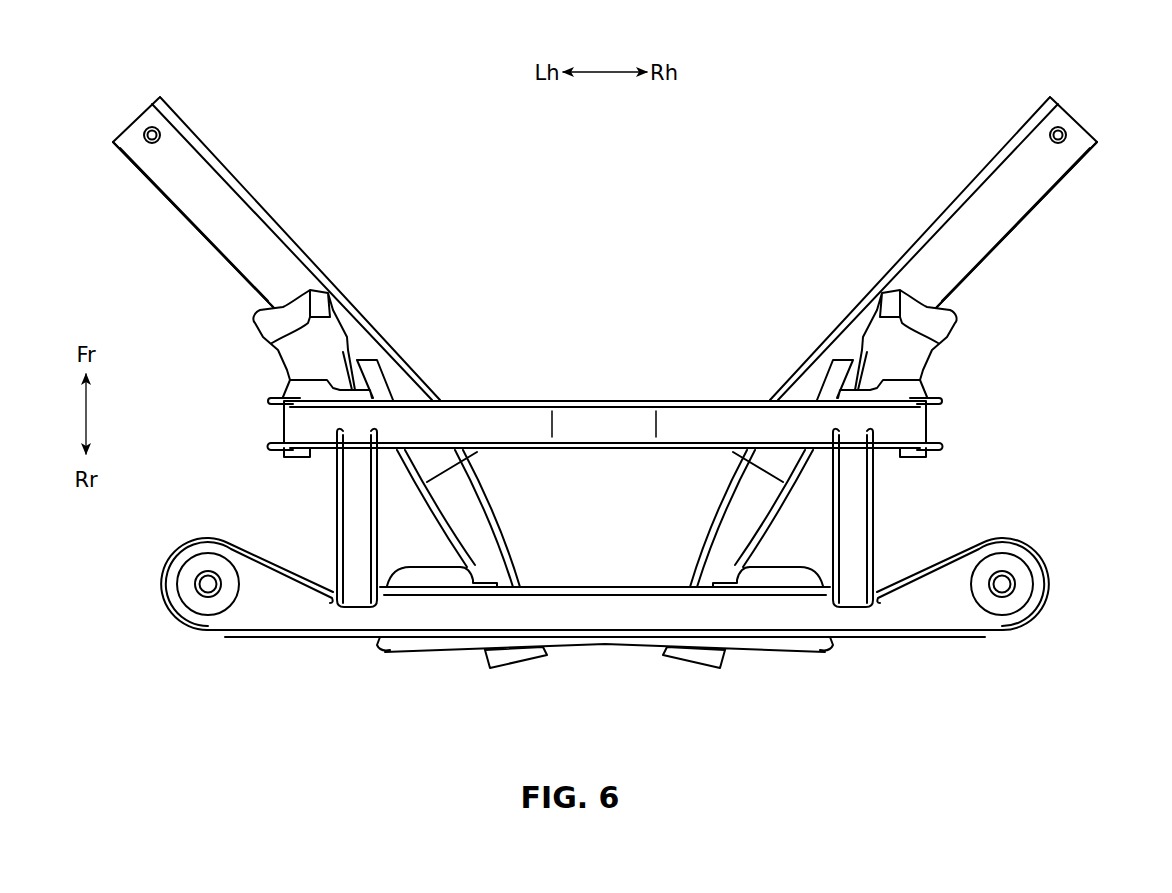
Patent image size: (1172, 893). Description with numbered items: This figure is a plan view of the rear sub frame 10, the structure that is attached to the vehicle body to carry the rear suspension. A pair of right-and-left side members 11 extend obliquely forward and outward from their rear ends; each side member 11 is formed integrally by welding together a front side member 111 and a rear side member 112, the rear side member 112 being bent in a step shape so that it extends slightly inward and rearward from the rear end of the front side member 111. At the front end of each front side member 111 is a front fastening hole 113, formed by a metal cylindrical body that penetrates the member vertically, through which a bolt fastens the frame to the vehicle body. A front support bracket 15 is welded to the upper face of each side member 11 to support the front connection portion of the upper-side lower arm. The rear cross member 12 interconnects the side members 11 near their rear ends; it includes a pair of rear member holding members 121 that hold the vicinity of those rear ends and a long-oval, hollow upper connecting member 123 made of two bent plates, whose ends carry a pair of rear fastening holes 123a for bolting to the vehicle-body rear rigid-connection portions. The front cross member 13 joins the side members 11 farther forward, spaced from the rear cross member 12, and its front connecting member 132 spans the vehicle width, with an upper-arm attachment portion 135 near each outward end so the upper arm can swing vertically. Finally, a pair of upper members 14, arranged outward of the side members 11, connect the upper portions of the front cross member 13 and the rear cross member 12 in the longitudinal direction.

The rear sub frame 10 is at (605, 383).
The side member 11 is at (605, 235).
The front side member 111 is at (170, 208).
The rear side member 112 is at (517, 543).
The front fastening hole 113 is at (142, 124).
The rear cross member 12 is at (605, 627).
The rear member holding member 121 is at (430, 577).
The upper connecting member 123 is at (605, 629).
The rear fastening hole 123a is at (208, 587).
The front cross member 13 is at (605, 387).
The front connecting member 132 is at (601, 418).
The upper-arm attachment portion 135 is at (293, 432).
The upper member 14 is at (334, 503).
The front support bracket 15 is at (262, 344).